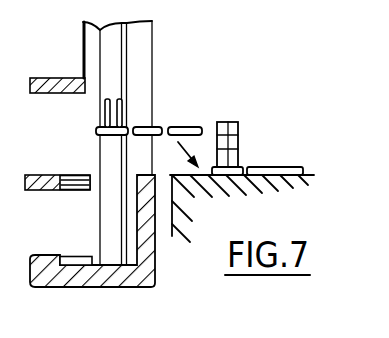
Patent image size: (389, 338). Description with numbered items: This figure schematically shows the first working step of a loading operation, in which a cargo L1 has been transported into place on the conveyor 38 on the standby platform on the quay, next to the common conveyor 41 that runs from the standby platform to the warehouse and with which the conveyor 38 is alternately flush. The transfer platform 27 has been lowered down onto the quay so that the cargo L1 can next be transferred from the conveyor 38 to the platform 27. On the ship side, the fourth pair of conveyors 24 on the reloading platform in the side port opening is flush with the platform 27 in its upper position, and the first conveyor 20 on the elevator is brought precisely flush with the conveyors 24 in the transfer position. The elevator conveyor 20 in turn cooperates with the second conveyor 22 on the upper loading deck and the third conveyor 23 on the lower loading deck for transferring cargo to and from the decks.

The first conveyor 20 is at (108, 104).
The second conveyor 22 is at (75, 175).
The third conveyor 23 is at (75, 256).
The fourth pair of conveyors 24 is at (145, 126).
The transfer platform 27 is at (183, 127).
The sixth pair of conveyors 38 is at (254, 128).
The common conveyor 41 is at (292, 168).
The cargo L1 is at (238, 126).